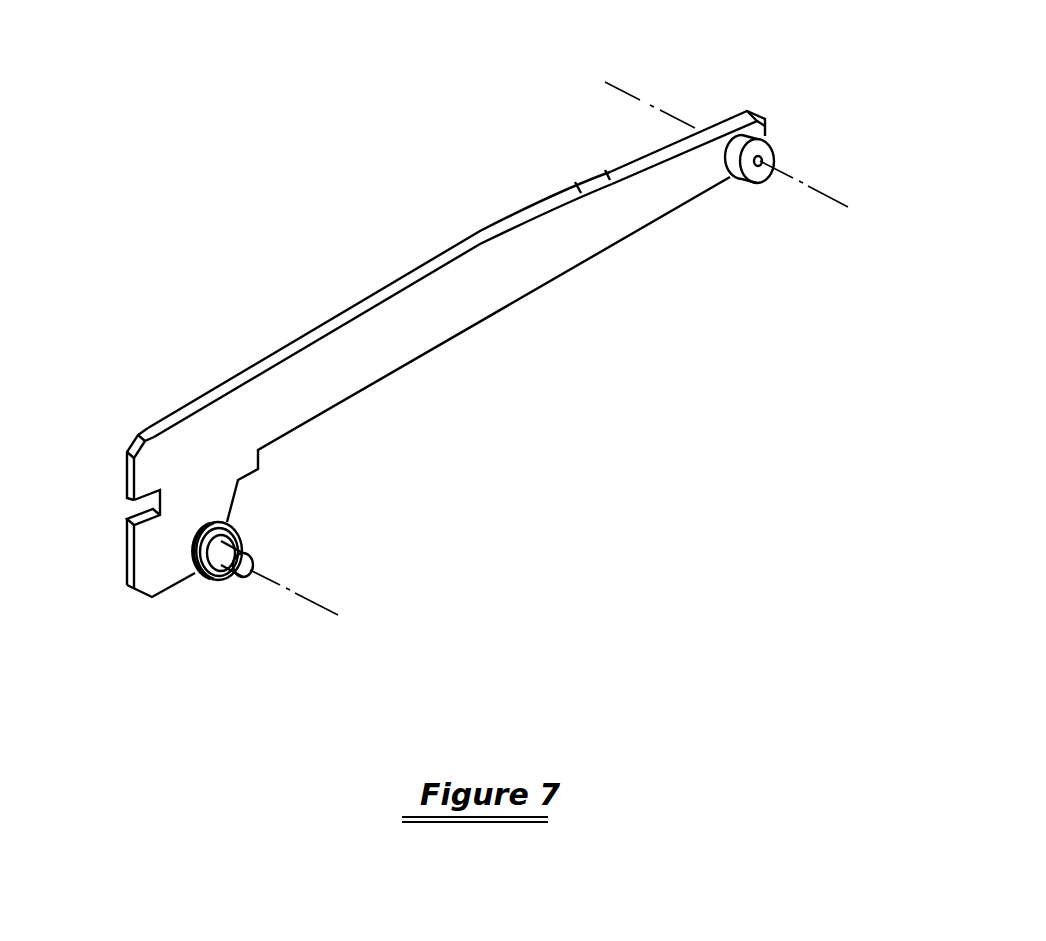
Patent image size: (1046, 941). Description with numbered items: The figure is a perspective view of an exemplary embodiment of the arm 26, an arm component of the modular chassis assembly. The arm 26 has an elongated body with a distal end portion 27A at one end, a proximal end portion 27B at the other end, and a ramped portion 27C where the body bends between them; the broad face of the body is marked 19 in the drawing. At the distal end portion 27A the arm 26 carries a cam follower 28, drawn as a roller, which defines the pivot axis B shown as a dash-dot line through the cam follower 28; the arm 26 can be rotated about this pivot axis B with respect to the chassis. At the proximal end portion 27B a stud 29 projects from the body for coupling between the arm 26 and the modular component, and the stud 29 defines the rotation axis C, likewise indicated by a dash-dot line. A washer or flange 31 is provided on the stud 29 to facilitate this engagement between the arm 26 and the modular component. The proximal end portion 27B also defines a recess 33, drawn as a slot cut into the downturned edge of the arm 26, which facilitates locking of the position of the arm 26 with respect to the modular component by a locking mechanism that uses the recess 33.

The arm 26 is at (416, 186).
The lever arm 19 is at (404, 346).
The distal end portion 27A is at (725, 136).
The proximal end portion 27B is at (178, 437).
The ramped portion 27C is at (637, 158).
The cam follower 28 is at (751, 173).
The stud 29 is at (233, 545).
The washer or flange 31 is at (207, 583).
The recess 33 is at (140, 510).
The pivot axis B is at (830, 201).
The rotation axis C is at (318, 605).